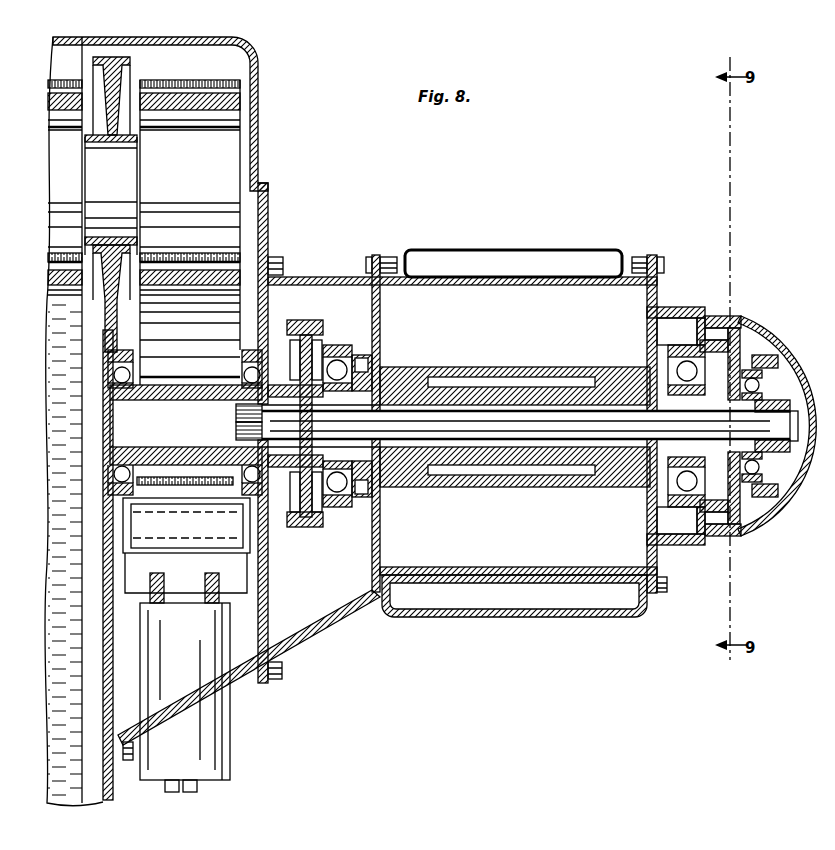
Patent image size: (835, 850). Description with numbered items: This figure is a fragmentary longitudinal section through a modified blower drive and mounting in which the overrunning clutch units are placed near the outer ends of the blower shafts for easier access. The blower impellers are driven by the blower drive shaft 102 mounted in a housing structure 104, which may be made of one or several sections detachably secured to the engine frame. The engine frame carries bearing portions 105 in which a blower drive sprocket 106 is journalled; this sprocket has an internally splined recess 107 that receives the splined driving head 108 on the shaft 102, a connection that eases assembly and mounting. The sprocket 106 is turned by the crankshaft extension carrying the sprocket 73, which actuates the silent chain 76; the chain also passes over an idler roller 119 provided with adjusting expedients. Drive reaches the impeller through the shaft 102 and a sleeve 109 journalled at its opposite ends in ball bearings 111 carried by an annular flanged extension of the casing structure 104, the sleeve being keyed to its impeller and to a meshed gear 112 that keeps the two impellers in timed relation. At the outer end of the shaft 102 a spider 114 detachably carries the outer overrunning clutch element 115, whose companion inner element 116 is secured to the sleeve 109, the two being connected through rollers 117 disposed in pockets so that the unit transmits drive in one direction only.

The sprocket 73 is at (244, 110).
The chain 76 is at (243, 86).
The blower drive shaft 102 is at (414, 425).
The housing structure 104 is at (470, 272).
The bearing portions 105 is at (267, 338).
The blower drive sprocket 106 is at (170, 457).
The internally splined recess 107 is at (238, 438).
The splined driving head 108 is at (238, 418).
The sleeve 109 is at (487, 396).
The ball bearings 111 is at (360, 368).
The meshed gear 112 is at (297, 530).
The spider 114 is at (800, 378).
The outer overrunning clutch element 115 is at (744, 330).
The inner clutch element 116 is at (753, 357).
The rollers 117 is at (722, 346).
The idler roller 119 is at (183, 507).